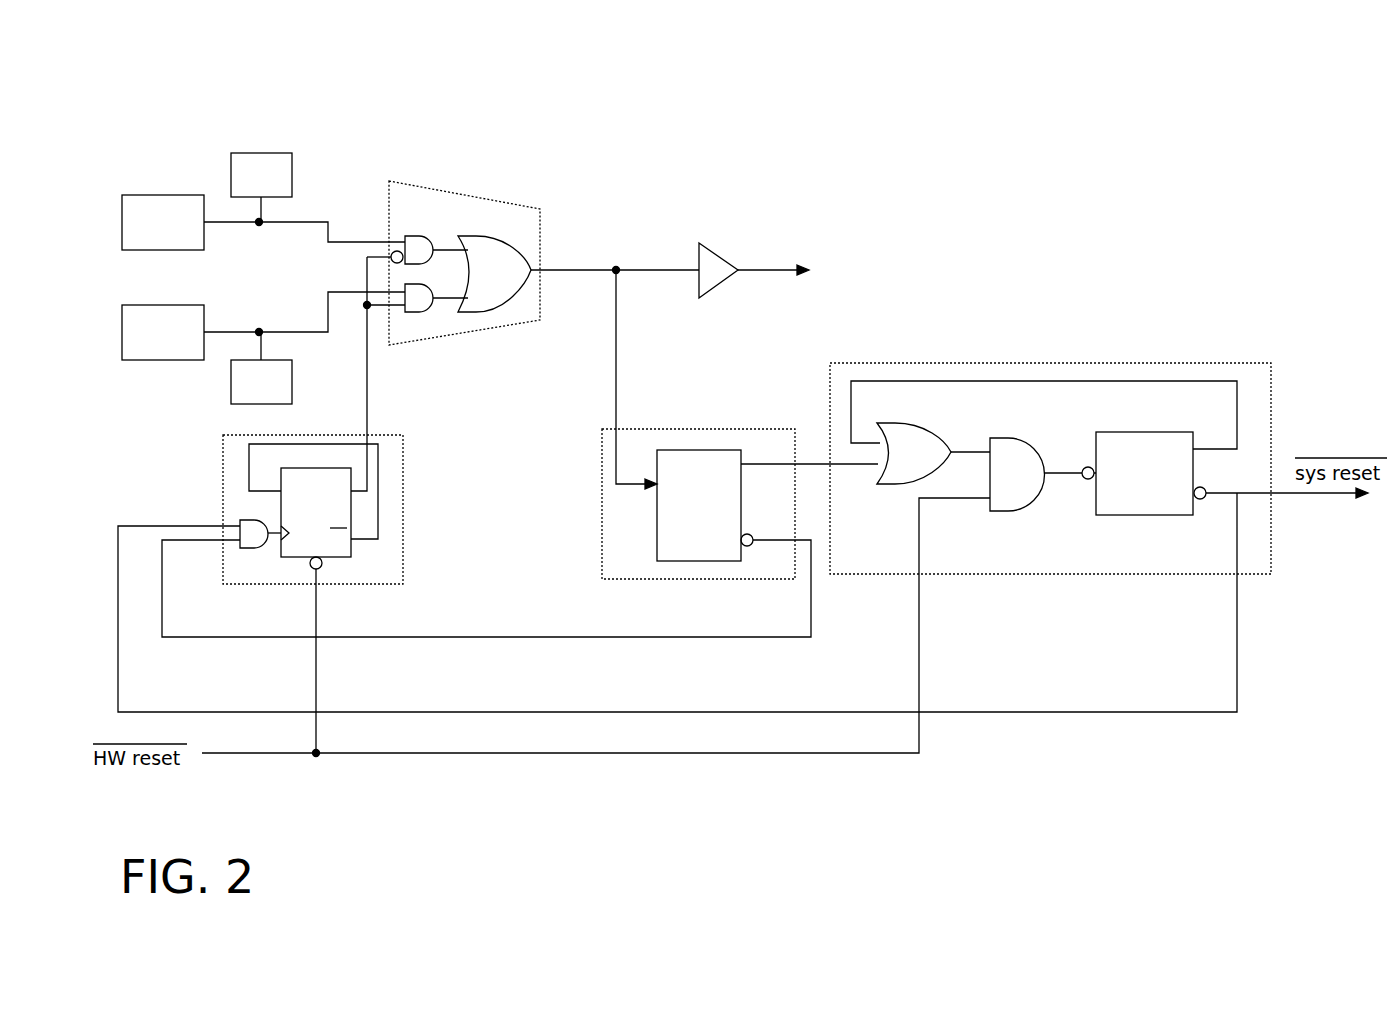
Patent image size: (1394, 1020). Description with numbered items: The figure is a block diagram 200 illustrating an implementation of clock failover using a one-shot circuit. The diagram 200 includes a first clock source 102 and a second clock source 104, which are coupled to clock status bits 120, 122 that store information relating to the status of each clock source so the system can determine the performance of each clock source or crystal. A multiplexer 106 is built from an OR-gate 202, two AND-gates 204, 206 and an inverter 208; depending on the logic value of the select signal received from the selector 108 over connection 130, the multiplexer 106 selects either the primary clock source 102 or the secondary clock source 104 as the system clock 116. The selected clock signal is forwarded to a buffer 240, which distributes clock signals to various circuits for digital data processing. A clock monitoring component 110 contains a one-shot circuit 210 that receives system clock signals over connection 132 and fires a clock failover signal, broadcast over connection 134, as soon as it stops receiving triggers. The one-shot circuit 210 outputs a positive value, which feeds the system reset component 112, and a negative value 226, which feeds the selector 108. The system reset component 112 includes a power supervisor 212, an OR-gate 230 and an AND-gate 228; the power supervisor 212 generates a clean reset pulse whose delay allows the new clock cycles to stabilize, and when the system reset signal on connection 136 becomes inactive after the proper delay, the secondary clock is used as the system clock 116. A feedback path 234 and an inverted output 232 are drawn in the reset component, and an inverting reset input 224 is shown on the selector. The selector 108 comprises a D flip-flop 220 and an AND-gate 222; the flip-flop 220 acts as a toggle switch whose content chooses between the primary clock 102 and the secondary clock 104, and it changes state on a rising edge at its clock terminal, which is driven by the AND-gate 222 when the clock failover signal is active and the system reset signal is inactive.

The diagram 200 is at (1197, 62).
The first clock source 102 is at (165, 195).
The second clock source 104 is at (165, 305).
The clock status bit 120 is at (243, 186).
The clock status bit 122 is at (243, 393).
The multiplexer 106 is at (543, 249).
The OR-gate 202 is at (484, 281).
The AND-gate 204 is at (417, 248).
The AND-gate 206 is at (417, 300).
The inverter 208 is at (394, 251).
The buffer 240 is at (712, 272).
The system clock 116 is at (837, 270).
The connection 132 is at (617, 367).
The connection 130 is at (368, 412).
The selector 108 is at (403, 520).
The D flip-flop 220 is at (287, 467).
The AND-gate 222 is at (253, 530).
The inverting reset input 224 is at (319, 570).
The clock monitoring component 110 is at (602, 518).
The one-shot circuit 210 is at (681, 546).
The negative value 226 is at (746, 548).
The connection 134 is at (492, 637).
The connection 136 is at (1080, 712).
The system reset component 112 is at (1183, 362).
The OR-gate 230 is at (920, 440).
The feedback line 234 is at (1085, 383).
The AND-gate 228 is at (999, 484).
The power supervisor 212 is at (1126, 486).
The inverted system reset output 232 is at (1200, 500).